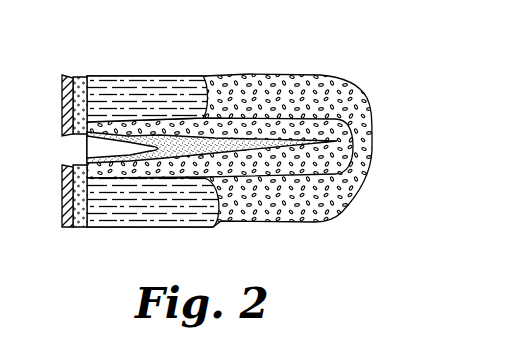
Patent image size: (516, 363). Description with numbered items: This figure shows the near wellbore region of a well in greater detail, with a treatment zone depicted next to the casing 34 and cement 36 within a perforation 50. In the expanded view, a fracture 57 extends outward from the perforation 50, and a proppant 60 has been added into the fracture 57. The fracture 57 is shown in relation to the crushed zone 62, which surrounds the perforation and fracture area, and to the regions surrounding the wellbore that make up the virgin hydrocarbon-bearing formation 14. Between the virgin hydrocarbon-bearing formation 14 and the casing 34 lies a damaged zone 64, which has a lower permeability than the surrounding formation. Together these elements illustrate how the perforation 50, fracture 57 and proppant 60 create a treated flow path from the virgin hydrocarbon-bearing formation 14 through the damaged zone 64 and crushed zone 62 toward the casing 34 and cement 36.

The virgin hydrocarbon-bearing formation 14 is at (266, 210).
The casing 34 is at (60, 88).
The cement 36 is at (77, 82).
The perforation 50 is at (107, 160).
The fracture 57 is at (274, 139).
The proppant 60 is at (223, 133).
The crushed zone 62 is at (325, 129).
The damaged zone 64 is at (125, 83).